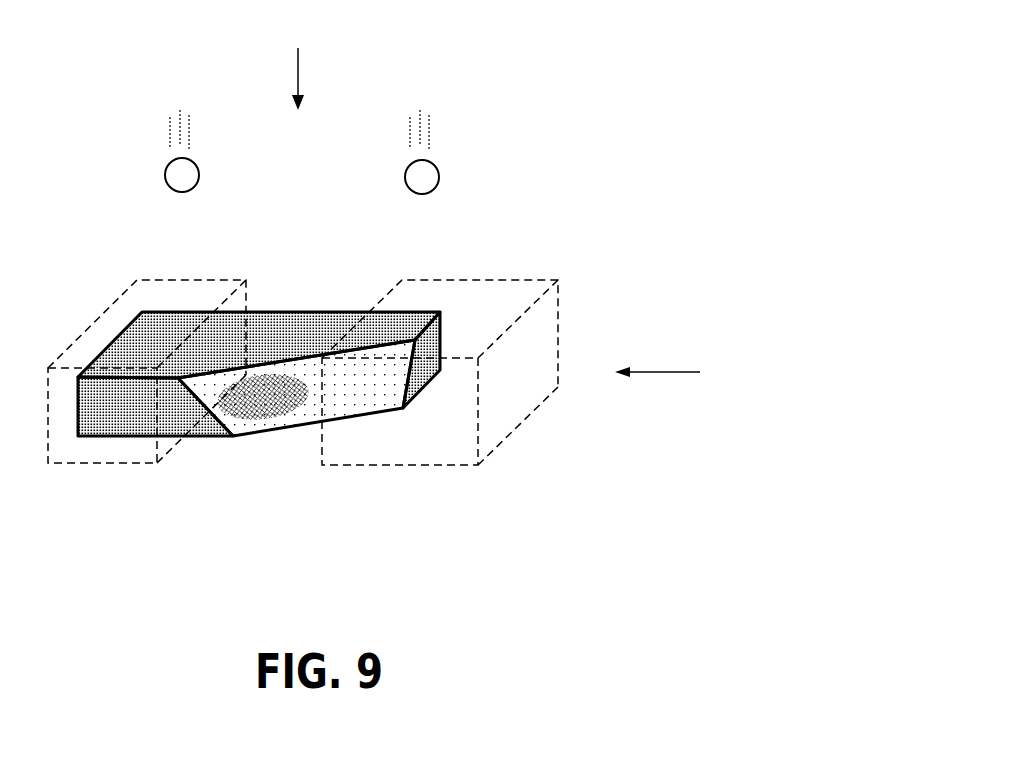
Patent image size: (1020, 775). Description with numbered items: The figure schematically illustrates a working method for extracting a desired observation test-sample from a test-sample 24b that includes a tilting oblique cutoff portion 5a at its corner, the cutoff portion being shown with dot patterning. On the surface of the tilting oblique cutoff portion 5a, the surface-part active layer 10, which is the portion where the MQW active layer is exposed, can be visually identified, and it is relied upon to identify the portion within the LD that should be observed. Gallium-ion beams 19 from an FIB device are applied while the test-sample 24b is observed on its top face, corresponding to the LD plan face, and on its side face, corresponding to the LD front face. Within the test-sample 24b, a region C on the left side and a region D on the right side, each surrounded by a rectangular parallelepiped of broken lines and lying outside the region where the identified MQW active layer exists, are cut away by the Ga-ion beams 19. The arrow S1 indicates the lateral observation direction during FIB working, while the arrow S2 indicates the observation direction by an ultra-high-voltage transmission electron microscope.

The Ga-ion beams 19 is at (155, 175).
The test-sample 24b is at (312, 333).
The surface-part active layer 10 is at (272, 422).
The tilting oblique cutoff portion 5a is at (310, 413).
The region C is at (90, 330).
The region D is at (440, 280).
The arrow S1 is at (298, 72).
The arrow S2 is at (660, 372).